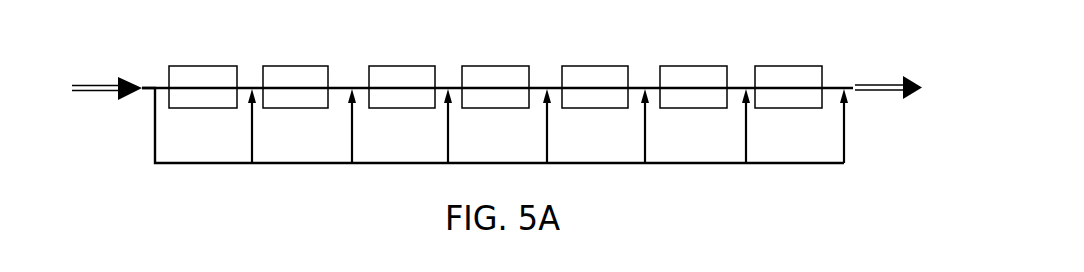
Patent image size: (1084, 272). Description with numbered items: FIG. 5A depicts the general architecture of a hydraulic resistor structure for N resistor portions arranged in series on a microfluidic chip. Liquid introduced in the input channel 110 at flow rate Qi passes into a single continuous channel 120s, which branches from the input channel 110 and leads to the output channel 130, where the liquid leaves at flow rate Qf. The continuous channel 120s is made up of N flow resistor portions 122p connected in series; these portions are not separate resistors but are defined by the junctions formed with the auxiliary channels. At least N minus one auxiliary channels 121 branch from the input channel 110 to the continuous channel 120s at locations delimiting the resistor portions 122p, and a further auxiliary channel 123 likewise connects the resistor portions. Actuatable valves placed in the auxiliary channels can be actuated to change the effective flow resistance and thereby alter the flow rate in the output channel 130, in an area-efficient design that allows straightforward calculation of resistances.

The input channel 110 is at (108, 82).
The continuous channel 120s is at (495, 54).
The auxiliary channels 121 is at (257, 145).
The flow resistor portions 122p is at (203, 63).
The auxiliary channel 123 is at (340, 86).
The output channel 130 is at (877, 82).